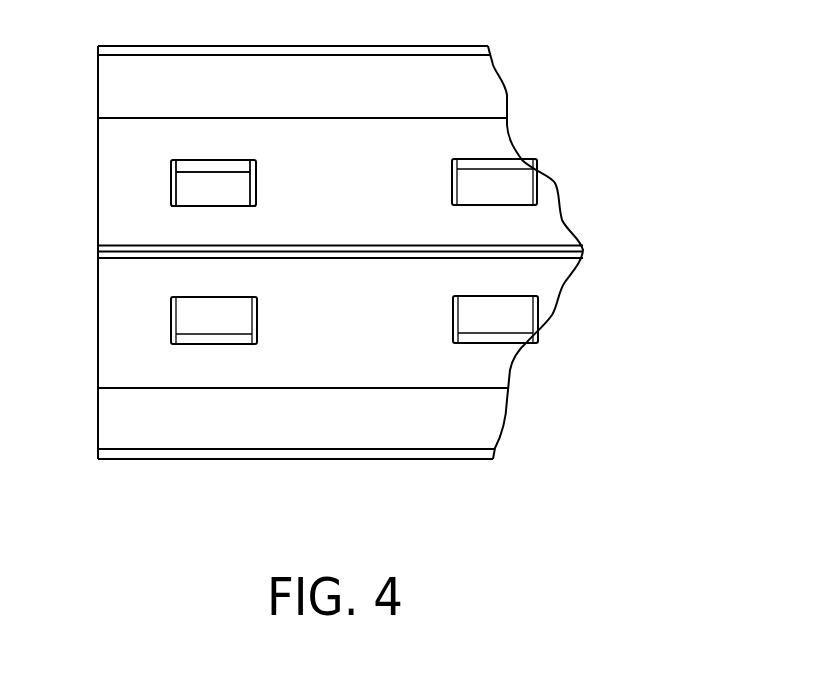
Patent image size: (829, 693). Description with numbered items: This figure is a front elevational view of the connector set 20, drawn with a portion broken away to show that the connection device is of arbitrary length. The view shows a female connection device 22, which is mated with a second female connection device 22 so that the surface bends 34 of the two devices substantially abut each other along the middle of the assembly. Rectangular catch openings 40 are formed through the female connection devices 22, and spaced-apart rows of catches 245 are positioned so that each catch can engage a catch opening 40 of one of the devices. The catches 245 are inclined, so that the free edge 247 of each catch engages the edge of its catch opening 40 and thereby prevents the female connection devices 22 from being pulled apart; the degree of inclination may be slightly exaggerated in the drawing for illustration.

The connector set 20 is at (97, 480).
The female connection device 22 is at (98, 91).
The surface bend 34 is at (123, 246).
The catch opening 40 is at (192, 205).
The catch 245 is at (257, 167).
The free edge 247 is at (240, 208).